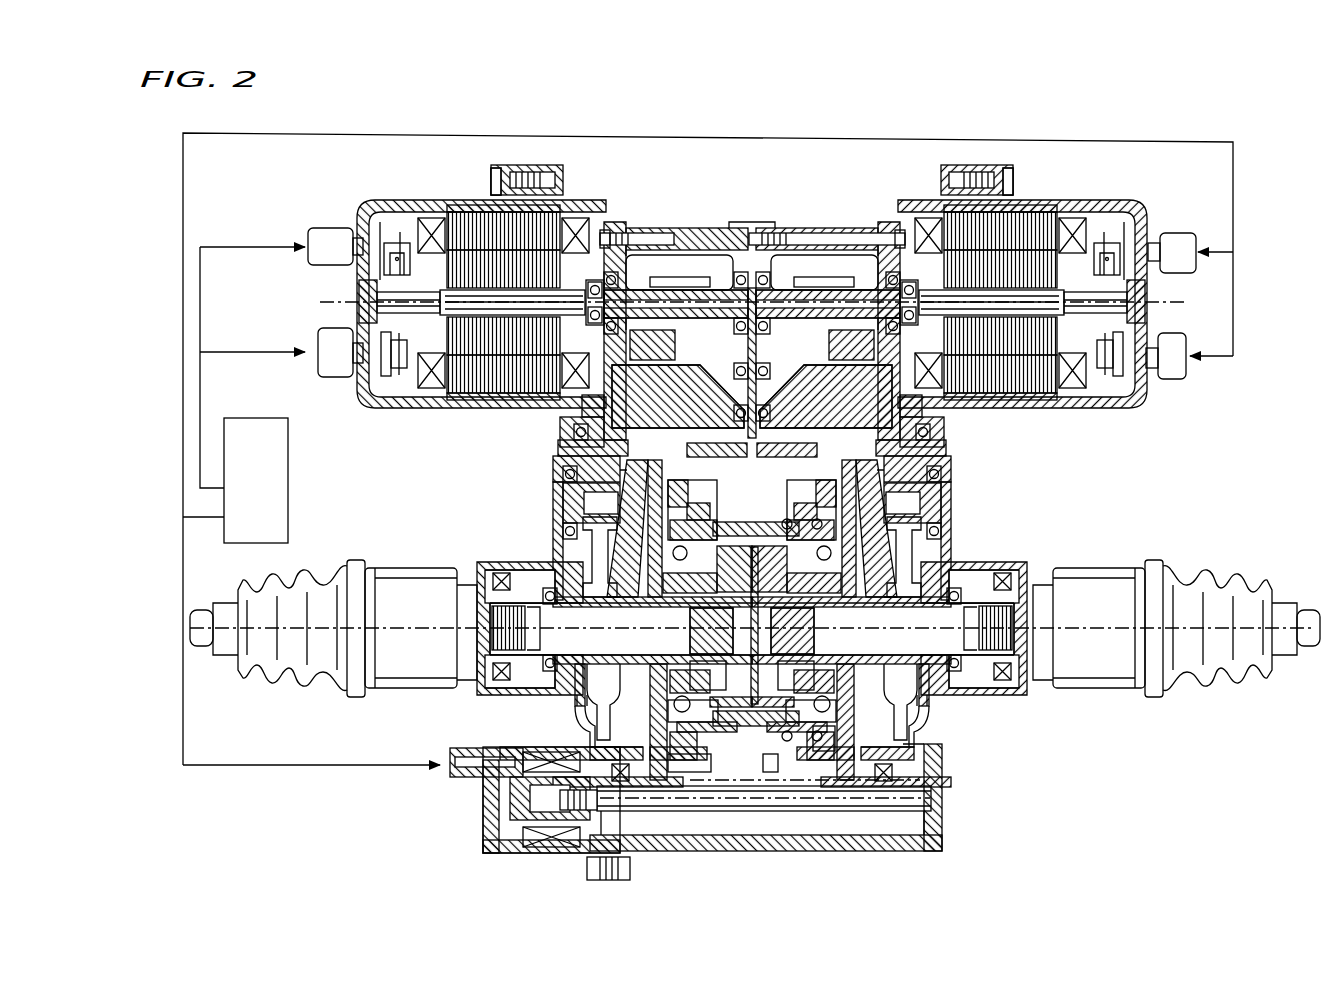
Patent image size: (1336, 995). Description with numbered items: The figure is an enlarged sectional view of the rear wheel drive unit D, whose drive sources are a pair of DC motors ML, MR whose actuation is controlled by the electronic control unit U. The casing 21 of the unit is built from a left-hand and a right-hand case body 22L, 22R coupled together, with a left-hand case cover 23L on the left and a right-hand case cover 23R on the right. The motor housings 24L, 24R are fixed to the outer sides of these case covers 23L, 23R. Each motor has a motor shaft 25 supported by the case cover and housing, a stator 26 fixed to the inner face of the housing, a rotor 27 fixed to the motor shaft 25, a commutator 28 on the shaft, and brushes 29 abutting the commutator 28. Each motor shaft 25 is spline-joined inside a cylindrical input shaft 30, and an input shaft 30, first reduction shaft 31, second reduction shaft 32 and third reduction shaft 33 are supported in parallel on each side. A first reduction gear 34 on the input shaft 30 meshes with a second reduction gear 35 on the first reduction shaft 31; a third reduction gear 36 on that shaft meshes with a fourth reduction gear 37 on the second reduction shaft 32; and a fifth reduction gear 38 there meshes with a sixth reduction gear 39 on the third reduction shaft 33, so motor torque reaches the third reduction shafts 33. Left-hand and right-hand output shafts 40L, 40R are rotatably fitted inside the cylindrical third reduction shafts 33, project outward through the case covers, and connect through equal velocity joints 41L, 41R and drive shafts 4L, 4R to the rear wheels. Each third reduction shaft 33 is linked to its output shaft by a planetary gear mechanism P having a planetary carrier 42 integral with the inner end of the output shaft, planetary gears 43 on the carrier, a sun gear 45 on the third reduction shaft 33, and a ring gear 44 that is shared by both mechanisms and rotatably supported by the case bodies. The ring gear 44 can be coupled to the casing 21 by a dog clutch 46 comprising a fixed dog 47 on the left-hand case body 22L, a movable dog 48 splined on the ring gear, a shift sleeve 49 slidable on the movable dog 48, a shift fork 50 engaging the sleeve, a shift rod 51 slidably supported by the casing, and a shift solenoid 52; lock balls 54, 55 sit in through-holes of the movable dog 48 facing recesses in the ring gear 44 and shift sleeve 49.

The left-hand DC motor ML is at (400, 198).
The right-hand DC motor MR is at (1104, 208).
The electronic control unit U is at (247, 497).
The rear wheel drive unit D is at (752, 466).
The casing 21 is at (705, 225).
The left-hand case body 22L is at (672, 252).
The right-hand case body 22R is at (833, 252).
The left-hand case cover 23L is at (604, 210).
The right-hand case cover 23R is at (894, 210).
The motor housing of the left-hand motor 24L is at (478, 217).
The motor housing of the right-hand motor 24R is at (1024, 217).
The motor shaft 25 is at (508, 293).
The stator 26 is at (490, 390).
The rotor 27 is at (560, 398).
The commutator 28 is at (393, 393).
The brush 29 is at (383, 262).
The input shaft 30 is at (640, 286).
The first reduction shaft 31 is at (683, 400).
The second reduction shaft 32 is at (752, 502).
The third reduction shaft 33 is at (752, 591).
The first reduction gear 34 is at (674, 251).
The second reduction gear 35 is at (748, 360).
The third reduction gear 36 is at (643, 360).
The fourth reduction gear 37 is at (752, 444).
The fifth reduction gear 38 is at (752, 436).
The sixth reduction gear 39 is at (578, 726).
The left-hand output shaft 40L is at (621, 629).
The right-hand output shaft 40R is at (883, 629).
The left-hand equal velocity joint 41L is at (410, 582).
The right-hand equal velocity joint 41R is at (1102, 582).
The left-hand drive shaft 4L is at (200, 608).
The right-hand drive shaft 4R is at (1300, 620).
The planetary carrier 42 is at (672, 722).
The planetary gear 43 is at (754, 500).
The ring gear 44 is at (737, 522).
The sun gear 45 is at (752, 681).
The dog clutch 46 is at (787, 824).
The fixed dog 47 is at (689, 768).
The movable dog 48 is at (756, 743).
The shift sleeve 49 is at (838, 754).
The shift fork 50 is at (778, 763).
The shift rod 51 is at (934, 798).
The shift solenoid 52 is at (504, 745).
The lock ball 54 is at (788, 519).
The lock ball 55 is at (817, 519).
The planetary gear mechanism P is at (751, 625).